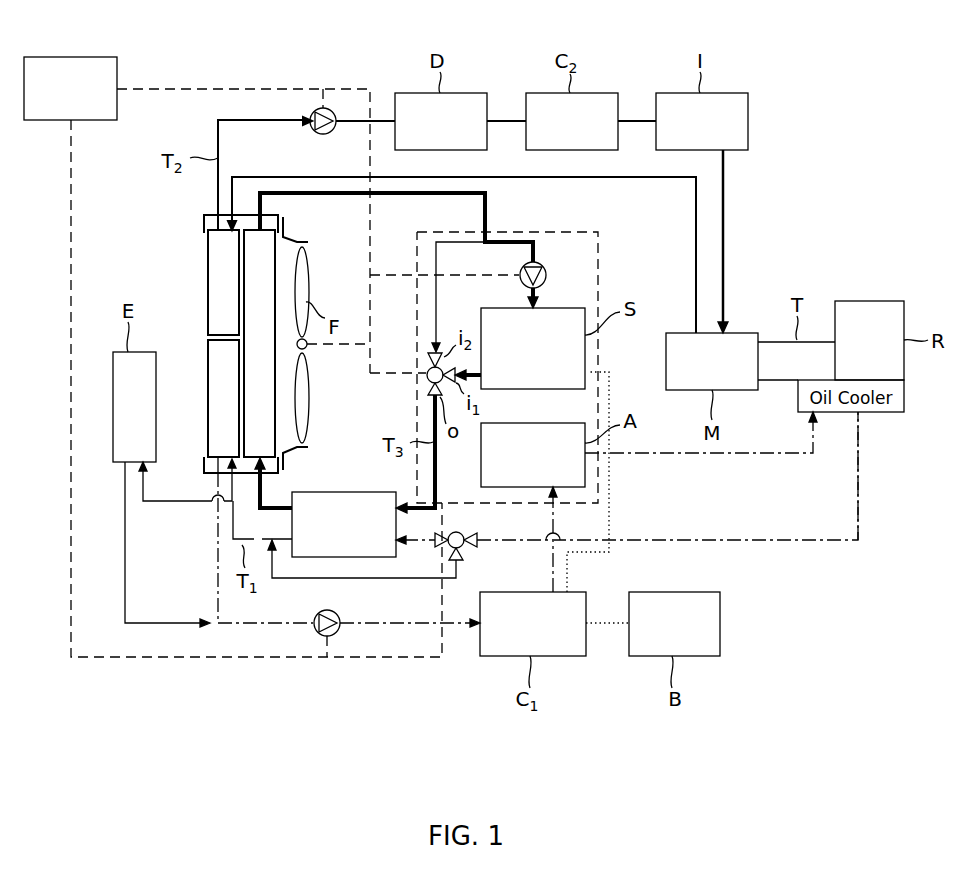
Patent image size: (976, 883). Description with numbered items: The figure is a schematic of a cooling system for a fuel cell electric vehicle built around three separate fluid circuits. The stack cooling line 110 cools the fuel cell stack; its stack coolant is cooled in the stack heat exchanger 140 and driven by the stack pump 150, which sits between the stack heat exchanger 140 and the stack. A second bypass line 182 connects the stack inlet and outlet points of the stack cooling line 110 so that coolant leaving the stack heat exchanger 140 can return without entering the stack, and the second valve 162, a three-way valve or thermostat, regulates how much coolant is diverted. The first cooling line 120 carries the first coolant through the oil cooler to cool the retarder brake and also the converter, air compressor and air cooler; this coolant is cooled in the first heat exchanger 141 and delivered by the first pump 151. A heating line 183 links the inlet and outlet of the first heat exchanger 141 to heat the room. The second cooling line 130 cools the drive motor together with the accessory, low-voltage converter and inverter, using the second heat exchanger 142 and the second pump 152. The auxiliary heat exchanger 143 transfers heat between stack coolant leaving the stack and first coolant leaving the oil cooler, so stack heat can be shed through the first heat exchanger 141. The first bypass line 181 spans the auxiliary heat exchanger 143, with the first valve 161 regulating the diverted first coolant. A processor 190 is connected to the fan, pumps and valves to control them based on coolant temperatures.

The processor 190 is at (72, 57).
The second pump 152 is at (328, 135).
The second heat exchanger 142 is at (208, 283).
The first heat exchanger 141 is at (208, 393).
The stack heat exchanger 140 is at (275, 405).
The auxiliary heat exchanger 143 is at (340, 492).
The heating line 183 is at (175, 505).
The first bypass line 181 is at (405, 579).
The first pump 151 is at (337, 612).
The first valve 161 is at (456, 531).
The second valve 162 is at (426, 378).
The second bypass line 182 is at (436, 316).
The stack pump 150 is at (547, 280).
The stack cooling line 110 is at (486, 200).
The second cooling line 130 is at (723, 200).
The first cooling line 120 is at (858, 500).